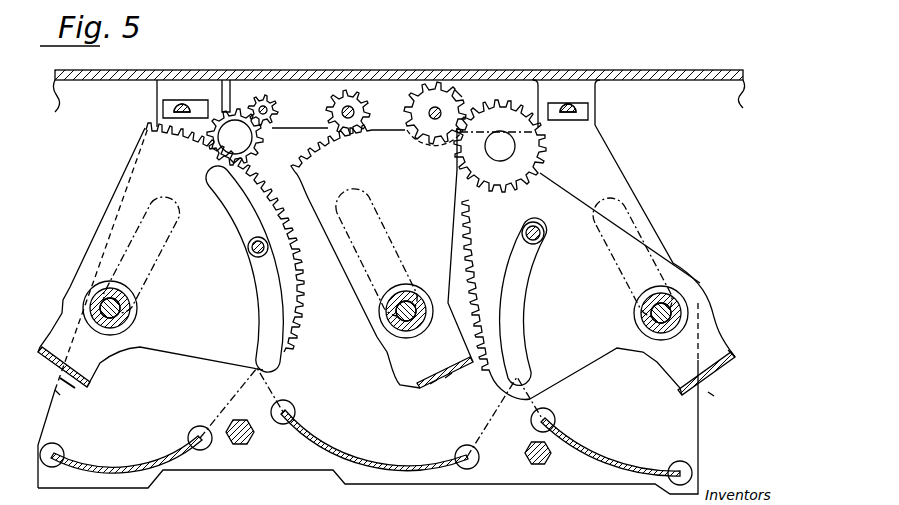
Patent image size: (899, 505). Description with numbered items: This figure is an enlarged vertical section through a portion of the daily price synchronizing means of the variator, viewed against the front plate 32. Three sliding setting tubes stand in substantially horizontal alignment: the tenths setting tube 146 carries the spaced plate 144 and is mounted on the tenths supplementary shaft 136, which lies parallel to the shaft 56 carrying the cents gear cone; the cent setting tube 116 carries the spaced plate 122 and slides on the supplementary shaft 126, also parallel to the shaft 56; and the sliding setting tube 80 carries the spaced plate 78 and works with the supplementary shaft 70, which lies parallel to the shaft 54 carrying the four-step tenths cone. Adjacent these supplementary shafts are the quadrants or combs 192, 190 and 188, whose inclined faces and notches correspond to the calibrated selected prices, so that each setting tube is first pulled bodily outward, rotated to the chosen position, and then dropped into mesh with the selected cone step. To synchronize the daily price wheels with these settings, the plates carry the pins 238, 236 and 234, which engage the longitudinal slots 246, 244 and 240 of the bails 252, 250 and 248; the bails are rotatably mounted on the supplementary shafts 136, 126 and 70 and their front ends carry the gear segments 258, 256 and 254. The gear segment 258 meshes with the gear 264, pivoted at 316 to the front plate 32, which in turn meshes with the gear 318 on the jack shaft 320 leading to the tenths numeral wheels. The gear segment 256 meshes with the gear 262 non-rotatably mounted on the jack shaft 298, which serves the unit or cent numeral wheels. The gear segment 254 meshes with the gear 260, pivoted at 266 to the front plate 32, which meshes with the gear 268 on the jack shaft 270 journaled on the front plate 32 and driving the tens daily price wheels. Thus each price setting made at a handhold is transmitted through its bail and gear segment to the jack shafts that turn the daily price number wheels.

The front plate 32 is at (645, 172).
The gear segment 258 is at (143, 163).
The bail 252 is at (40, 348).
The longitudinal slot 246 is at (70, 377).
The pin 238 is at (56, 391).
The spaced plate 144 is at (163, 207).
The shaft 56 is at (249, 247).
The sliding setting tube 146 is at (103, 307).
The tenths supplementary shaft 136 is at (110, 303).
The gear 264 is at (229, 108).
The pivot 316 is at (252, 140).
The gear 318 is at (257, 96).
The jack shaft 320 is at (268, 105).
The gear 262 is at (348, 104).
The jack shaft 298 is at (342, 108).
The jack shaft 270 is at (435, 106).
The gear 268 is at (456, 92).
The gear 260 is at (503, 106).
The pivot 266 is at (516, 146).
The gear segment 256 is at (375, 141).
The bail 250 is at (430, 388).
The longitudinal slot 244 is at (433, 392).
The pin 236 is at (447, 385).
The spaced plate 122 is at (363, 230).
The supplementary shaft 126 is at (400, 325).
The sliding setting tube 116 is at (397, 316).
The gear segment 254 is at (553, 192).
The longitudinal slot 240 is at (718, 377).
The bail 248 is at (734, 355).
The pin 234 is at (713, 397).
The spaced plate 78 is at (655, 240).
The shaft 54 is at (541, 238).
The sliding setting tube 80 is at (675, 312).
The supplementary shaft 70 is at (684, 290).
The quadrant or comb 192 is at (103, 463).
The quadrant or comb 190 is at (325, 445).
The quadrant or comb 188 is at (590, 458).